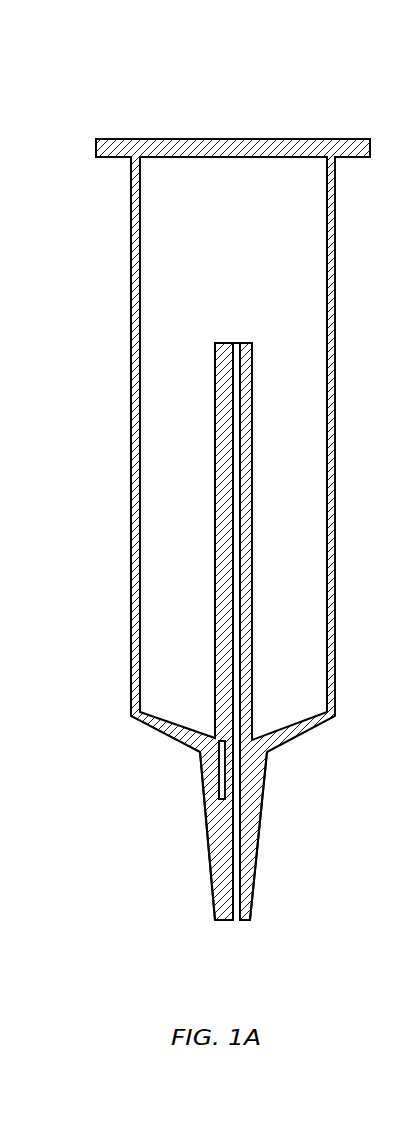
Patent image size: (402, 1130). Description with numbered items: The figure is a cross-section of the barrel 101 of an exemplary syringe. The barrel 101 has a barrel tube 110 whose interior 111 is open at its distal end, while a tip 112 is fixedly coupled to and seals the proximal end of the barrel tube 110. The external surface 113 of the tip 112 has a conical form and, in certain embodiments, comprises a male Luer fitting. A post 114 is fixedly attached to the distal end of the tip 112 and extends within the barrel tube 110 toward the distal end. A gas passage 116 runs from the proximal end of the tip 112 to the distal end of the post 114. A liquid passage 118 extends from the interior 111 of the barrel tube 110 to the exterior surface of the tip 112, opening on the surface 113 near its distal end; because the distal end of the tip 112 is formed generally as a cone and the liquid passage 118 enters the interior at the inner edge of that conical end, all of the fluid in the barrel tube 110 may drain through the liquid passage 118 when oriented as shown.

The barrel 101 is at (193, 45).
The barrel tube 110 is at (133, 357).
The interior 111 is at (190, 260).
The tip 112 is at (248, 835).
The external surface 113 is at (198, 840).
The post 114 is at (227, 626).
The gas passage 116 is at (239, 562).
The liquid passage 118 is at (208, 734).